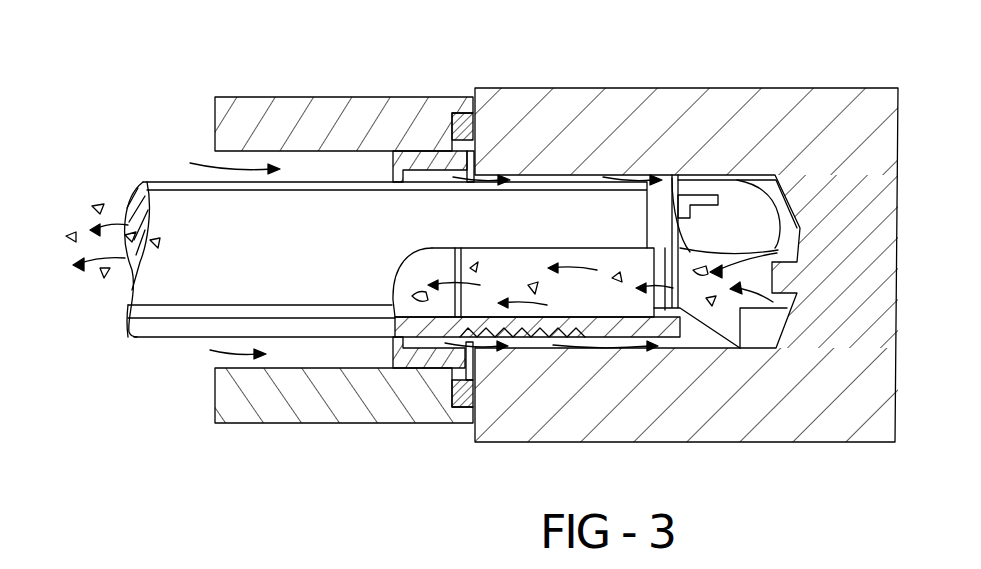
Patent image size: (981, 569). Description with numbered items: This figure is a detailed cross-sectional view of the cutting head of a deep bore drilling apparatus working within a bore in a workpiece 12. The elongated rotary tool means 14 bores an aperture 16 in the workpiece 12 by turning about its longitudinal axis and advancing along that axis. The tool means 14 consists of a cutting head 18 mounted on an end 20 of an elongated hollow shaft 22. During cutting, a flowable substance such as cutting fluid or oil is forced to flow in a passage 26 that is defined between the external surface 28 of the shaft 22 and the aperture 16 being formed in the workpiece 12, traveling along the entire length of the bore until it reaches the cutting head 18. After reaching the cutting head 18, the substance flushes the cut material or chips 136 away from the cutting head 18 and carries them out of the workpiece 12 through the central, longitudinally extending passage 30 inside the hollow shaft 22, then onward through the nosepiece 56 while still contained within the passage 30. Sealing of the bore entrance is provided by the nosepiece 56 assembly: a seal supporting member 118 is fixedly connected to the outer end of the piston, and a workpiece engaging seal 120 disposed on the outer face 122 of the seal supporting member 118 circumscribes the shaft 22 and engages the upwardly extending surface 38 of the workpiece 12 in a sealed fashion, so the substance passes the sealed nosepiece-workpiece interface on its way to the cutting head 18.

The workpiece 12 is at (777, 103).
The rotary tool means 14 is at (139, 160).
The aperture 16 is at (555, 175).
The cutting head 18 is at (760, 337).
The end 20 is at (668, 178).
The hollow shaft 22 is at (133, 338).
The passage 26 is at (568, 345).
The external surface 28 is at (175, 340).
The central passage 30 is at (447, 318).
The upwardly extending surface 38 is at (467, 430).
The nosepiece 56 is at (300, 84).
The seal supporting member 118 is at (218, 422).
The workpiece engaging seal 120 is at (467, 110).
The outer face 122 is at (477, 139).
The chips 136 is at (493, 272).